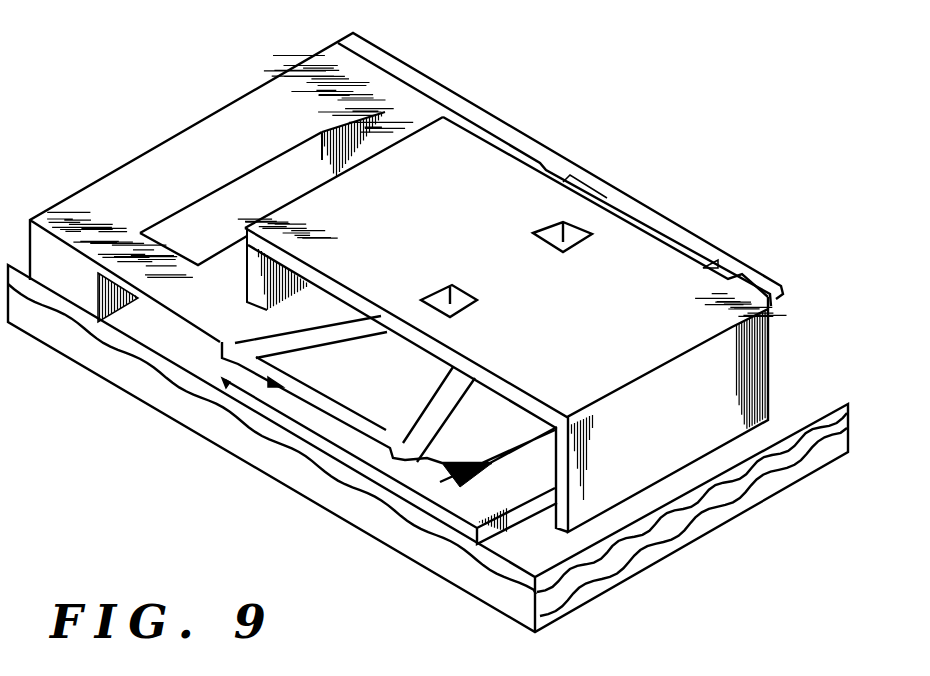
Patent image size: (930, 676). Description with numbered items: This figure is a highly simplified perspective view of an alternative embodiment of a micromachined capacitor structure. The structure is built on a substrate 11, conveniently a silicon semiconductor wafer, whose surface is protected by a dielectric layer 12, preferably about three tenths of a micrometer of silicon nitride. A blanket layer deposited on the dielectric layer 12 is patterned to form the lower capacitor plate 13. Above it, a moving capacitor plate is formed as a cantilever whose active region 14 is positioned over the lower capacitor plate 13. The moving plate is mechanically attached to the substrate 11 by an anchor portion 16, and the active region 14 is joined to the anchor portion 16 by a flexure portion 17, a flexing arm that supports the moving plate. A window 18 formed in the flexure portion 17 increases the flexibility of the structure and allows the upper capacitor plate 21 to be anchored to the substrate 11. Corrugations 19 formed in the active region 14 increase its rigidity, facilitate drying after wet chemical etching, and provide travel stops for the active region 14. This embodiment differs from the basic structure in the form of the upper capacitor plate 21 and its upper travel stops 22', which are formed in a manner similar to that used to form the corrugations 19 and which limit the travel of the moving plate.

The substrate 11 is at (495, 592).
The dielectric layer 12 is at (452, 537).
The lower capacitor plate 13 is at (348, 462).
The active region 14 is at (322, 400).
The anchor portion 16 is at (440, 57).
The flexure portion 17 is at (487, 110).
The window 18 is at (277, 185).
The corrugations 19 is at (230, 382).
The upper capacitor plate 21 is at (643, 318).
The upper travel stops 22' is at (501, 251).